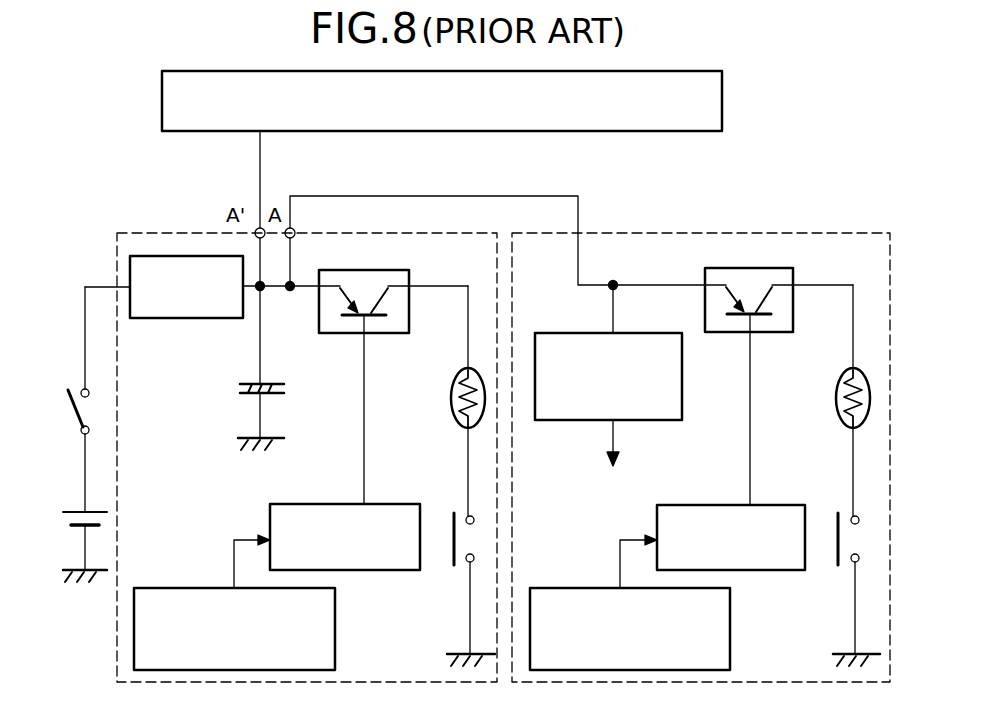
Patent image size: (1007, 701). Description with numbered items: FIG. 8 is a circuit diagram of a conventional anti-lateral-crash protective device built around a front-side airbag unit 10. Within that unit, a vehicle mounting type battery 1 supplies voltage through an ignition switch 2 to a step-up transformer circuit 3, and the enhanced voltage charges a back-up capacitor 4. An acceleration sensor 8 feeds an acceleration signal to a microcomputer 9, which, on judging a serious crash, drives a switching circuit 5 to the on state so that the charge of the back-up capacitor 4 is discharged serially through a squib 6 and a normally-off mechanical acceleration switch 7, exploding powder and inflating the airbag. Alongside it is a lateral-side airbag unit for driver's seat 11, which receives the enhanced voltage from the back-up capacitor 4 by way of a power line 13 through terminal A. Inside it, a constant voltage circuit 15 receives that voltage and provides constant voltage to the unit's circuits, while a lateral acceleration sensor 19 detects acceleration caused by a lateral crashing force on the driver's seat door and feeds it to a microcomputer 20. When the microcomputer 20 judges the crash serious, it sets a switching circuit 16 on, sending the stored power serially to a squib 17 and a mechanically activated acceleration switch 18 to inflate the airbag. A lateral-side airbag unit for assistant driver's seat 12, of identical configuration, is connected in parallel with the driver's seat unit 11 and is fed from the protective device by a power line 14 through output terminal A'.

The vehicle mounting type battery 1 is at (68, 506).
The ignition switch 2 is at (68, 386).
The step-up transformer circuit 3 is at (163, 319).
The back-up capacitor 4 is at (234, 390).
The switching circuit 5 is at (411, 312).
The squib 6 is at (450, 395).
The mechanical acceleration switch 7 is at (459, 510).
The acceleration sensor 8 is at (165, 587).
The microcomputer 9 is at (320, 503).
The front-side airbag unit 10 is at (143, 232).
The lateral-side airbag unit for driver's seat 11 is at (778, 232).
The lateral-side airbag unit for assistant driver's seat 12 is at (723, 96).
The power line 13 is at (478, 196).
The power line 14 is at (262, 160).
The constant voltage circuit 15 is at (558, 332).
The switching circuit 16 is at (795, 312).
The squib 17 is at (836, 396).
The mechanically activated acceleration switch 18 is at (843, 510).
The lateral acceleration sensor 19 is at (562, 587).
The microcomputer 20 is at (688, 504).